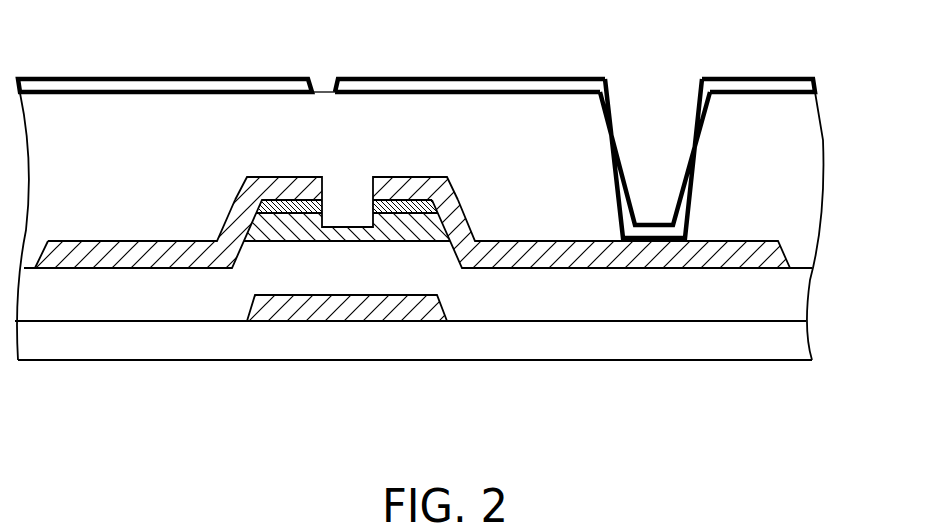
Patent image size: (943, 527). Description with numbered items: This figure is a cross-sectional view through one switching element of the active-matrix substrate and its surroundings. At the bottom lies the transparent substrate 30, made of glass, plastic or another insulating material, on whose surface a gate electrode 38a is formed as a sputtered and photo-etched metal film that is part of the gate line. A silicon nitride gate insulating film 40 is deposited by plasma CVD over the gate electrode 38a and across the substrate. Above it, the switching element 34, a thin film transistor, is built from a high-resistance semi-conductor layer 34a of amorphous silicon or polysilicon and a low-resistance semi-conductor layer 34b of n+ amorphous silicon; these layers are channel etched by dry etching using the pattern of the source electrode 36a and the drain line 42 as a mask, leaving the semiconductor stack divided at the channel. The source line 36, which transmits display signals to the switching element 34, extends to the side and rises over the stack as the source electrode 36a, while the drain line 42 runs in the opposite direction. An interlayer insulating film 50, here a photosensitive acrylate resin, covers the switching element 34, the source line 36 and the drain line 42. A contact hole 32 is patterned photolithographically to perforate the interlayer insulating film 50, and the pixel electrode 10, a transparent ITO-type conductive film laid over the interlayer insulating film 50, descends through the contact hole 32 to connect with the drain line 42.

The pixel electrode 10 is at (747, 77).
The transparent substrate 30 is at (752, 352).
The contact hole 32 is at (657, 222).
The switching element 34 is at (402, 130).
The high-resistance semi-conductor layer 34a is at (435, 228).
The low-resistance semi-conductor layer 34b is at (447, 183).
The source line 36 is at (78, 253).
The source electrode 36a is at (268, 183).
The gate electrode 38a is at (363, 313).
The gate insulating film 40 is at (680, 308).
The drain line 42 is at (540, 258).
The interlayer insulating film 50 is at (810, 147).